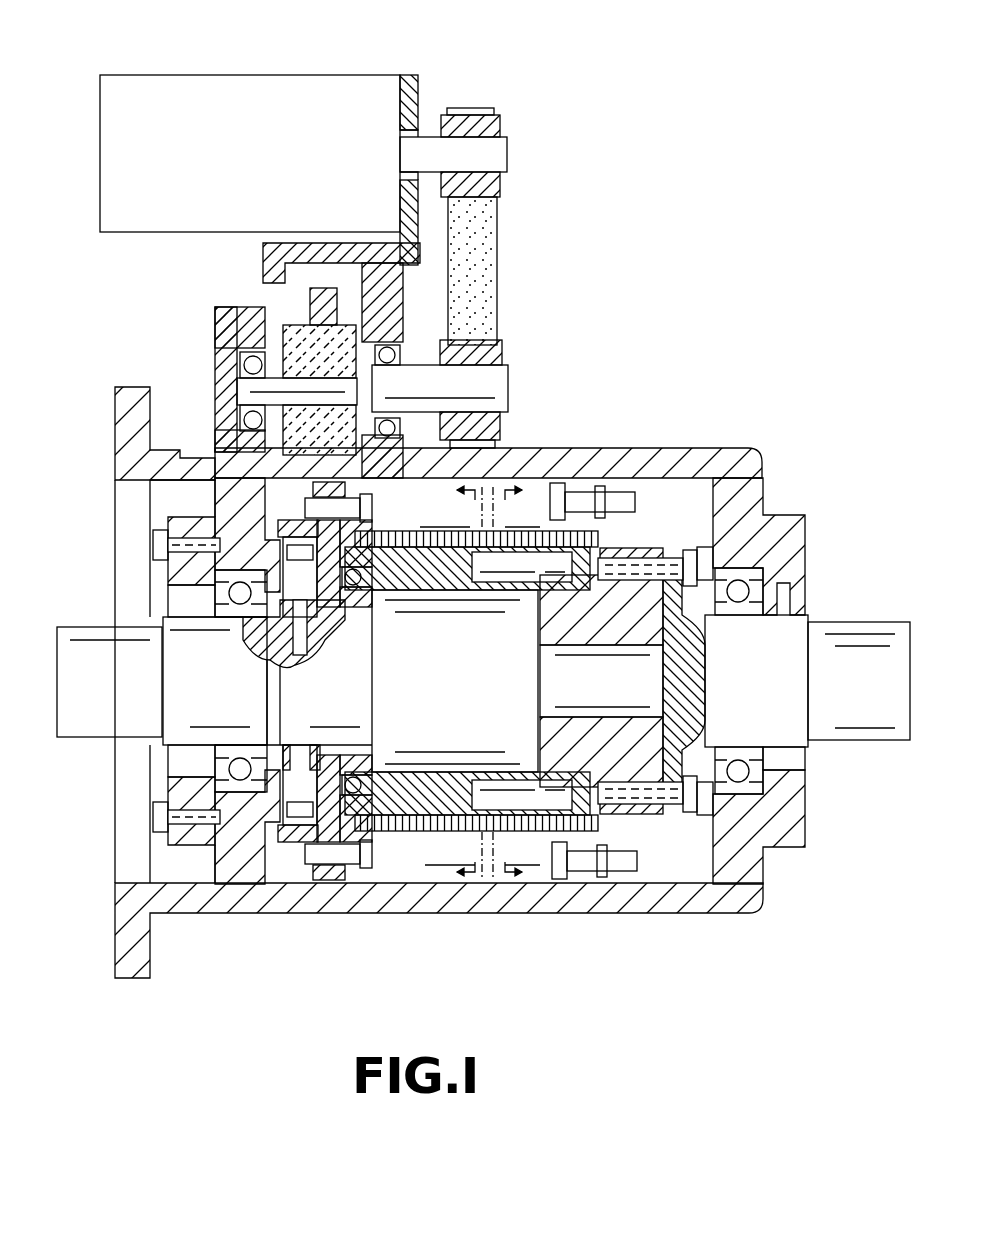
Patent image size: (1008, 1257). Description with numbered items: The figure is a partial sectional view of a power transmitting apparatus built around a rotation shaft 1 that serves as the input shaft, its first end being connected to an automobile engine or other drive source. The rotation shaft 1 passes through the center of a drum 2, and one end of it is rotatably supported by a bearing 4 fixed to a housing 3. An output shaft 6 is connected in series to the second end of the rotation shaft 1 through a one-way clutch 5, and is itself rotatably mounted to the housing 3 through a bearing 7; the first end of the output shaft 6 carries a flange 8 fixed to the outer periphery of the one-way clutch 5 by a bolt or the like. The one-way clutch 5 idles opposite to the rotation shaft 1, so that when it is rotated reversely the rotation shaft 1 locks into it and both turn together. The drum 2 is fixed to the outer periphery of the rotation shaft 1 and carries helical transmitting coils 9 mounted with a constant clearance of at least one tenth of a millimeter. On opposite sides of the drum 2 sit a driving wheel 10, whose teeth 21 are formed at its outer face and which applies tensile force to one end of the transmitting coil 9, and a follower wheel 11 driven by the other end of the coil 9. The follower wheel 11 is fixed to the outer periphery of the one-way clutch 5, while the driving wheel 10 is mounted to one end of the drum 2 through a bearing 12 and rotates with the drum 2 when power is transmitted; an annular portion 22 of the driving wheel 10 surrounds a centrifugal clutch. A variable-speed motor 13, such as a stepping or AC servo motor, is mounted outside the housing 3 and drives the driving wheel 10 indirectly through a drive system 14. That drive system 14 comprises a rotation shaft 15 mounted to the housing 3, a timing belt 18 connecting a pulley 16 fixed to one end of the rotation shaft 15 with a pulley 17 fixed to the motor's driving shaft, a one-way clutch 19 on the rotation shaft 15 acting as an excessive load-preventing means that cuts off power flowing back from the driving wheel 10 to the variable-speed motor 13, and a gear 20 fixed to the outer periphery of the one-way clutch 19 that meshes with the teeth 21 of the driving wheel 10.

The rotation shaft 1 is at (95, 632).
The drum 2 is at (423, 806).
The housing 3 is at (745, 448).
The bearing 4 is at (240, 792).
The one-way clutch 5 is at (650, 580).
The output shaft 6 is at (856, 646).
The bearing 7 is at (750, 570).
The flange 8 is at (684, 556).
The transmitting coil 9 is at (547, 520).
The driving wheel 10 is at (334, 862).
The follower wheel 11 is at (608, 872).
The bearing 12 is at (358, 552).
The variable-speed motor 13 is at (318, 78).
The drive system 14 is at (530, 255).
The rotation shaft 15 is at (508, 386).
The pulley 16 is at (503, 345).
The pulley 17 is at (502, 122).
The timing belt 18 is at (496, 220).
The one-way clutch 19 is at (232, 307).
The gear 20 is at (305, 342).
The teeth 21 is at (330, 882).
The annular portion 22 is at (293, 842).